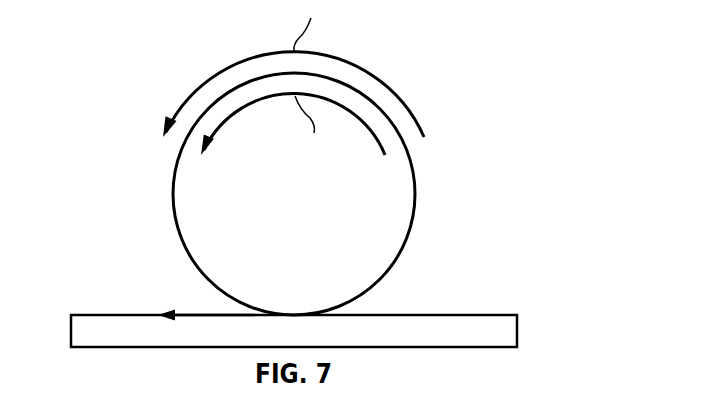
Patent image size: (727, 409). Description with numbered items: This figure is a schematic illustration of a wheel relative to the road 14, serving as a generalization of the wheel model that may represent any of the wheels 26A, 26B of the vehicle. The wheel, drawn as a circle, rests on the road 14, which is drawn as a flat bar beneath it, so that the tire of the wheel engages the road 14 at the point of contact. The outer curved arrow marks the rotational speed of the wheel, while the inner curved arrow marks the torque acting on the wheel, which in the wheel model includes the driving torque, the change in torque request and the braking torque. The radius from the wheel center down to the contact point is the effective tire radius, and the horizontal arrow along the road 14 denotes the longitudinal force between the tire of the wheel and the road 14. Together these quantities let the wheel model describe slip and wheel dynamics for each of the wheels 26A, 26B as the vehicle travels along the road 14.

The first set of wheels 26A is at (356, 157).
The second set of wheels 26B is at (413, 55).
The road 14 is at (448, 315).